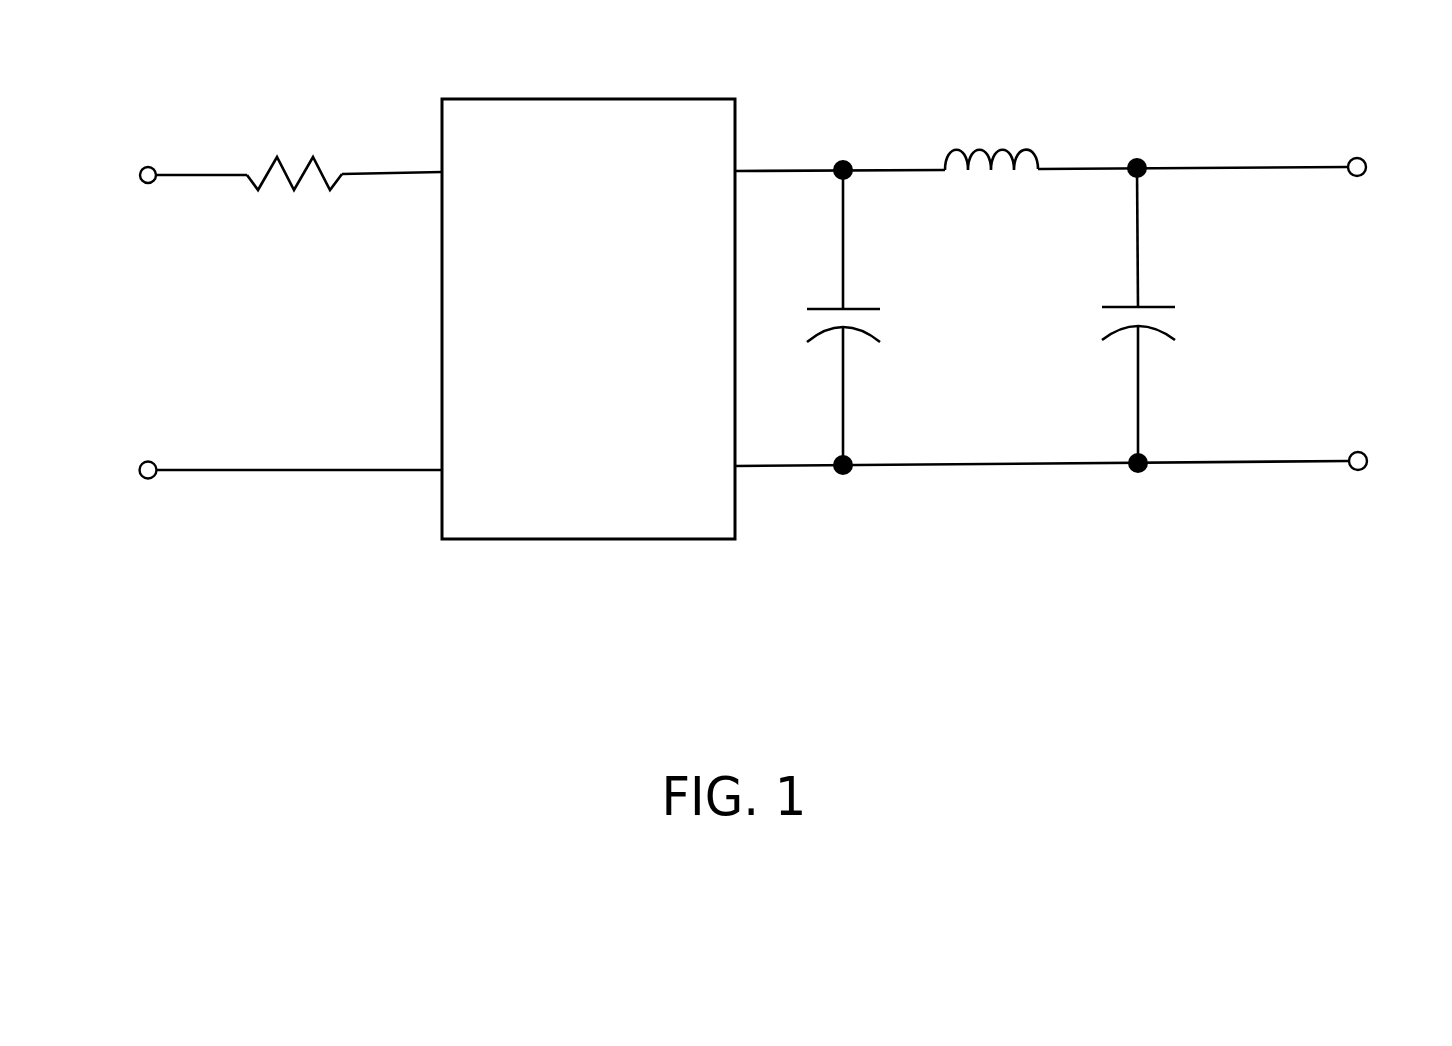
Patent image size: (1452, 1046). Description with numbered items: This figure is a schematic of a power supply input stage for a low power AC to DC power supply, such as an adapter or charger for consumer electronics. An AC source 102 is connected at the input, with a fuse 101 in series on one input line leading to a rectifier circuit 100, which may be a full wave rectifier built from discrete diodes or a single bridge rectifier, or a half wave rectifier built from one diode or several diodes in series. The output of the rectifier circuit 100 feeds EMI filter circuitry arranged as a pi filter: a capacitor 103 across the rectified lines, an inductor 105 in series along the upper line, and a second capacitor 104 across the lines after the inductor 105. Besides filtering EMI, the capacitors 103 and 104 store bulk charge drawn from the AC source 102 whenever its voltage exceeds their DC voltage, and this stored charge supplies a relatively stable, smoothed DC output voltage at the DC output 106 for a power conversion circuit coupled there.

The rectifier circuit 100 is at (615, 373).
The fuse 101 is at (294, 145).
The AC source 102 is at (149, 323).
The capacitor 103 is at (873, 317).
The capacitor 104 is at (1126, 315).
The inductor 105 is at (991, 137).
The DC output 106 is at (1359, 314).